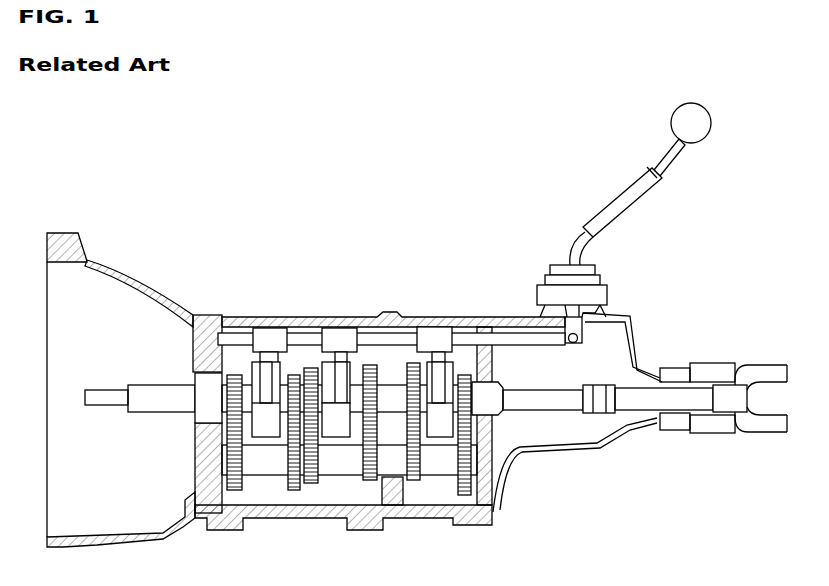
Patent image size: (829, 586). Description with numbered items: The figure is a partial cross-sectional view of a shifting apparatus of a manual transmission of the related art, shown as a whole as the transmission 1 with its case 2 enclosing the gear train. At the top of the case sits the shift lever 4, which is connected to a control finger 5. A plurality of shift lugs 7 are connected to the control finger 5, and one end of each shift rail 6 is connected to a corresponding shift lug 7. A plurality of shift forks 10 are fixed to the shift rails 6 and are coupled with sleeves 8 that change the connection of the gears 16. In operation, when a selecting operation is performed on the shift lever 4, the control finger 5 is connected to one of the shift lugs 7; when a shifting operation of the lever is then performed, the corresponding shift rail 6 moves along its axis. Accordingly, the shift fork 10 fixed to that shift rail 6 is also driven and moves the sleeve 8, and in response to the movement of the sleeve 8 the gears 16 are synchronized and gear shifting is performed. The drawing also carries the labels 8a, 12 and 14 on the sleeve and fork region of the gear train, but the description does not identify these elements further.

The manual transmission (related art) 1 is at (95, 210).
The transmission case 2 is at (497, 320).
The shift lever 4 is at (632, 200).
The control finger 5 is at (600, 322).
The shift rail 6 is at (465, 338).
The shift lug 7 is at (587, 327).
The sleeve 8 is at (340, 437).
The synchronizer sleeve 8a is at (263, 440).
The shift fork 10 is at (312, 228).
The shift fork 12 is at (338, 332).
The synchronizer hub/sleeve 14 is at (340, 370).
The gear 16 is at (373, 367).